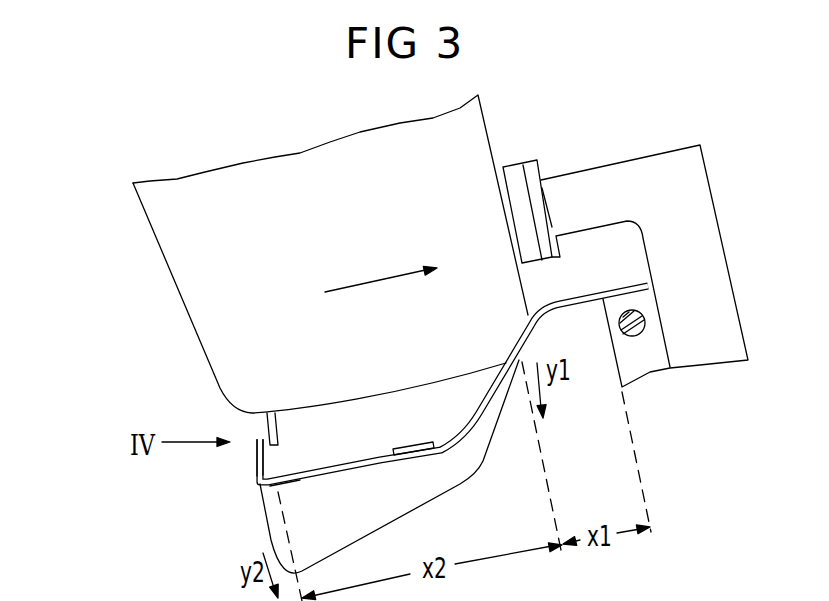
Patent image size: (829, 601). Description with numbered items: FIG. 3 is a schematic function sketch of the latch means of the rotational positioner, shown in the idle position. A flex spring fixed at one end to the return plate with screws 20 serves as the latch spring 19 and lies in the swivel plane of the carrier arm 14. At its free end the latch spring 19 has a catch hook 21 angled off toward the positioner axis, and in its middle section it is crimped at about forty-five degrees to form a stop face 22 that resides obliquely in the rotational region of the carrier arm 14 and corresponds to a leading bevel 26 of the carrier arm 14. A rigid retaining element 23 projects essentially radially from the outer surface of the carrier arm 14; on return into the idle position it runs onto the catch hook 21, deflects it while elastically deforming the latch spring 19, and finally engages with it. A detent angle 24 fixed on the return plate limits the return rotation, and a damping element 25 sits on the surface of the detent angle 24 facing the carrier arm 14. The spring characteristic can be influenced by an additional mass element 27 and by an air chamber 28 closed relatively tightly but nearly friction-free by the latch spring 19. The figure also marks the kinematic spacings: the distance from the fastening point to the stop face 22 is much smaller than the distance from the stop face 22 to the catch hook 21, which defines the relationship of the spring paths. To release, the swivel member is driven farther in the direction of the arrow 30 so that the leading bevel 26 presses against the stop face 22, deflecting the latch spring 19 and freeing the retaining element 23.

The carrier arm 14 is at (200, 308).
The latch spring 19 is at (394, 446).
The screws 20 is at (648, 330).
The catch hook 21 is at (258, 463).
The stop face 22 is at (523, 360).
The retaining element 23 is at (277, 438).
The detent angle 24 is at (615, 182).
The damping element 25 is at (515, 180).
The leading bevel 26 is at (505, 340).
The additional mass element 27 is at (264, 492).
The air chamber 28 is at (268, 535).
The arrow 30 is at (350, 292).